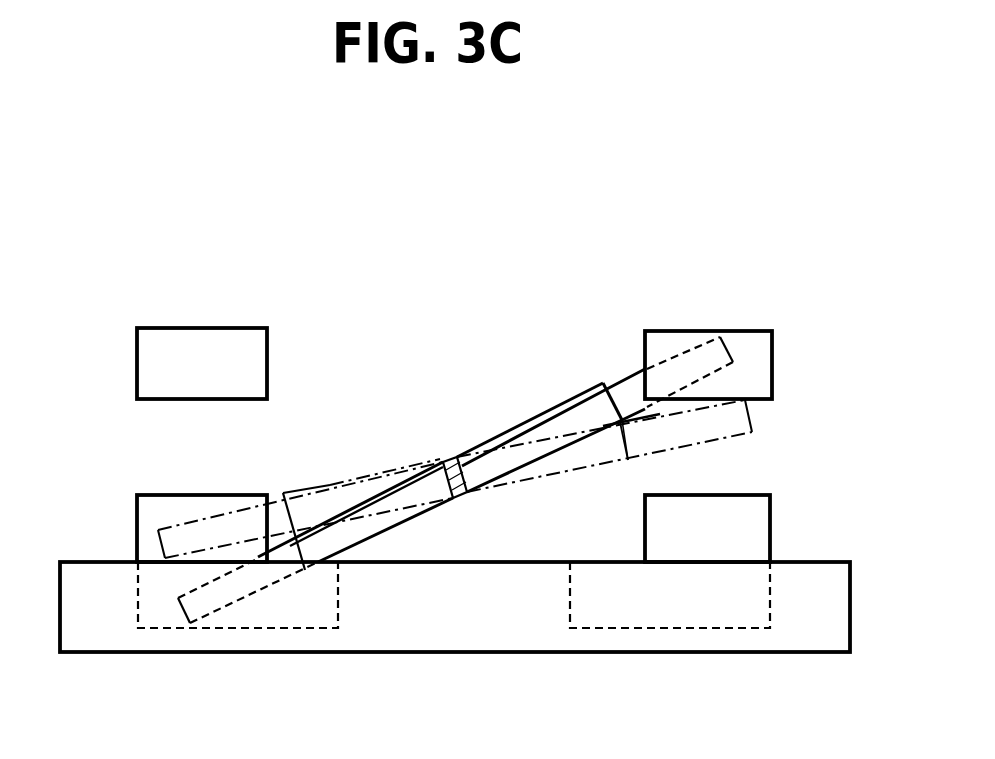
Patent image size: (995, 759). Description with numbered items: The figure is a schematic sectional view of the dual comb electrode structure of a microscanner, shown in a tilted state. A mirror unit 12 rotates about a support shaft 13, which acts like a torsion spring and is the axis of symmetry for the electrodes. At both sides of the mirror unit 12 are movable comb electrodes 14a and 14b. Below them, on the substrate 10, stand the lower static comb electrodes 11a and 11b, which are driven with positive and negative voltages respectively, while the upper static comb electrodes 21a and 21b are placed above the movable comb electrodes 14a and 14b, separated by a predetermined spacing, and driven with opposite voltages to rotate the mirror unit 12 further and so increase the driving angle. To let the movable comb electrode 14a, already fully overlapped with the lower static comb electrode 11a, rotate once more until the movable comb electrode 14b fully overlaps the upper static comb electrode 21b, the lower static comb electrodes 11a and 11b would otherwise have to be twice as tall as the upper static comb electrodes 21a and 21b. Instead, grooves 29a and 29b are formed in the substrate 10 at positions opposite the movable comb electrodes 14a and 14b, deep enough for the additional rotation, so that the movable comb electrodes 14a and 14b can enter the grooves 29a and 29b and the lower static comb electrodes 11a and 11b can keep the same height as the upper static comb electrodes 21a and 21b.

The substrate 10 is at (470, 630).
The lower static comb electrode 11a is at (158, 519).
The lower static comb electrode 11b is at (750, 528).
The mirror unit 12 is at (448, 426).
The support shaft 13 is at (465, 497).
The movable comb electrode 14a is at (218, 590).
The movable comb electrode 14b is at (710, 360).
The upper static comb electrode 21a is at (158, 360).
The upper static comb electrode 21b is at (758, 350).
The groove 29a is at (307, 612).
The groove 29b is at (678, 612).